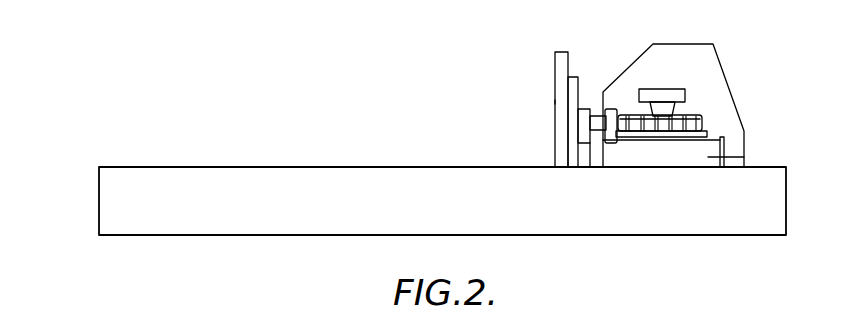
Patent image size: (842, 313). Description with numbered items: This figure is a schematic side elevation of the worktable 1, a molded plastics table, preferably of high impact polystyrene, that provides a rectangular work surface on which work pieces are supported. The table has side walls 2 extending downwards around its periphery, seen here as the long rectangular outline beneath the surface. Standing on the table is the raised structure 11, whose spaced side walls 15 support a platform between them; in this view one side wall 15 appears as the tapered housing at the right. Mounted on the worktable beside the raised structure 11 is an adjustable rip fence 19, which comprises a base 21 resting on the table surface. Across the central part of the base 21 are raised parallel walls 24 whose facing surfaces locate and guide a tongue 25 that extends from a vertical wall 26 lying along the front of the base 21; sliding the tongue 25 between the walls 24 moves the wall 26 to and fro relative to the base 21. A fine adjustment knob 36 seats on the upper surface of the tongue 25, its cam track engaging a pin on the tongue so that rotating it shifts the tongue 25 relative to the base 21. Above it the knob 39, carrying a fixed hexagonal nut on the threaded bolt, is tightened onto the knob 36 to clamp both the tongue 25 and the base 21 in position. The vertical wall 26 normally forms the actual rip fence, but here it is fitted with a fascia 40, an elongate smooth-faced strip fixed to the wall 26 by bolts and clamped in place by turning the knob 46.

The worktable 1 is at (217, 160).
The side walls 2 is at (362, 202).
The raised structure 11 is at (744, 90).
The side walls 15 is at (712, 67).
The rip fence 19 is at (546, 102).
The base 21 is at (744, 157).
The raised parallel walls 24 is at (722, 141).
The tongue 25 is at (590, 137).
The vertical wall 26 is at (576, 76).
The fine adjustment knob 36 is at (705, 119).
The knob 39 is at (661, 89).
The fascia 40 is at (556, 60).
The knob 46 is at (611, 108).